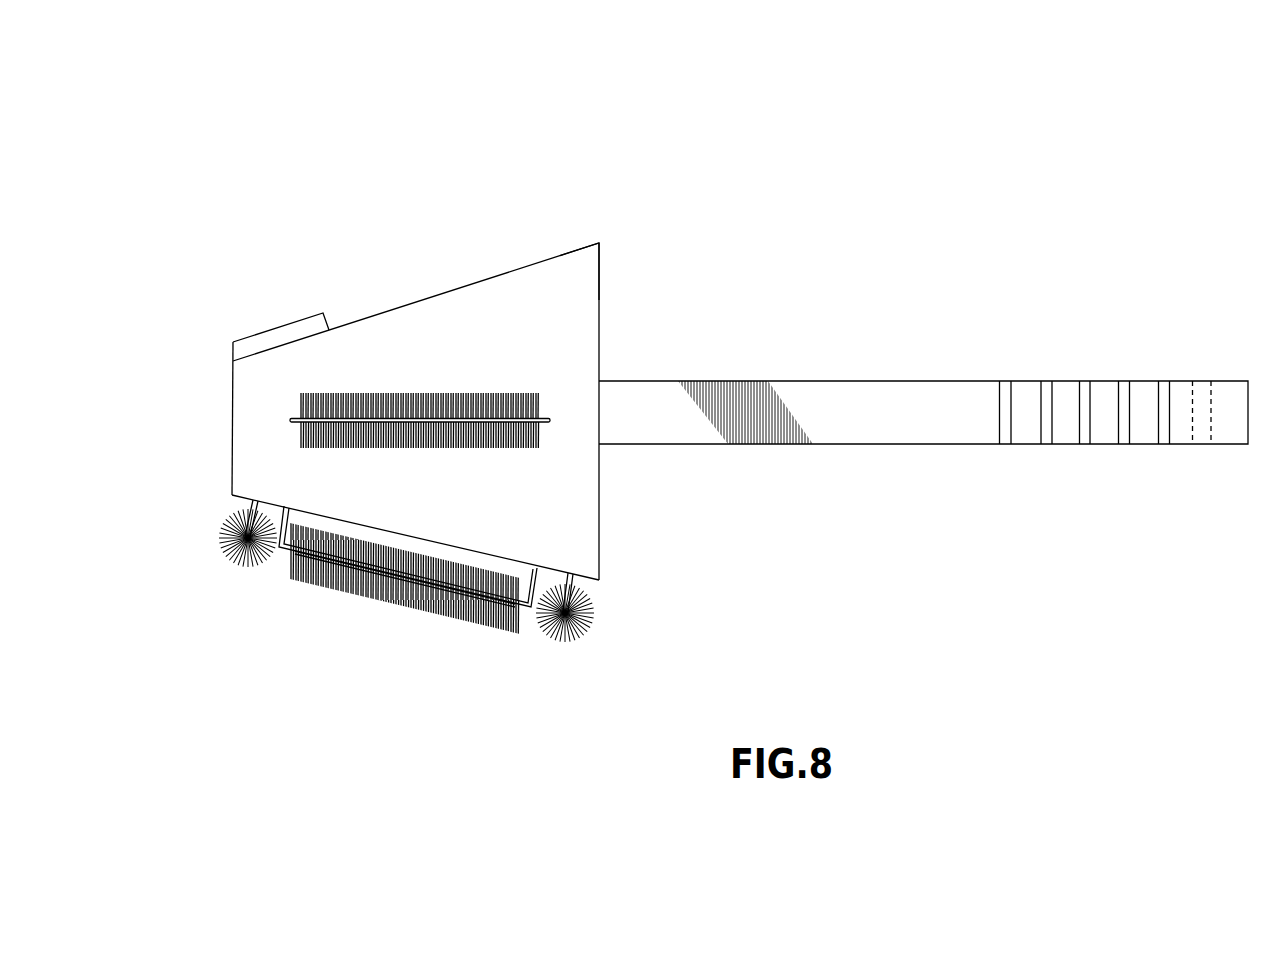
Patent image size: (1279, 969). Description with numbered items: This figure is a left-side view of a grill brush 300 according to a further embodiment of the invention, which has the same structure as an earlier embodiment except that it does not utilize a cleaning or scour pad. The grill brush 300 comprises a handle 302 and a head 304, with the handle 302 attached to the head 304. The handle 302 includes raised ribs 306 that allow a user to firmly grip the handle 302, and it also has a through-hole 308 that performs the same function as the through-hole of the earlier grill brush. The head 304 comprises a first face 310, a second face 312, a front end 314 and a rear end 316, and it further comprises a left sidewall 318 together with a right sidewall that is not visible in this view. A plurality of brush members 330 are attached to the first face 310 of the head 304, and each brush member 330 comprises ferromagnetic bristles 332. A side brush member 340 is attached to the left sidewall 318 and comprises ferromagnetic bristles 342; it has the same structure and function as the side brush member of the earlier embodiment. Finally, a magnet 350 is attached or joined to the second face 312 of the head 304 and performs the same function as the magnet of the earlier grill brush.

The grill brush 300 is at (660, 140).
The handle 302 is at (852, 381).
The head 304 is at (340, 288).
The raised ribs 306 is at (1047, 438).
The through-hole 308 is at (1207, 392).
The first face 310 is at (593, 583).
The second face 312 is at (515, 270).
The front end 314 is at (232, 427).
The rear end 316 is at (599, 523).
The left sidewall 318 is at (575, 282).
The brush members 330 is at (238, 562).
The ferromagnetic bristles 332 is at (220, 540).
The side brush member 340 is at (460, 370).
The ferromagnetic bristles 342 is at (387, 403).
The magnet 350 is at (248, 337).